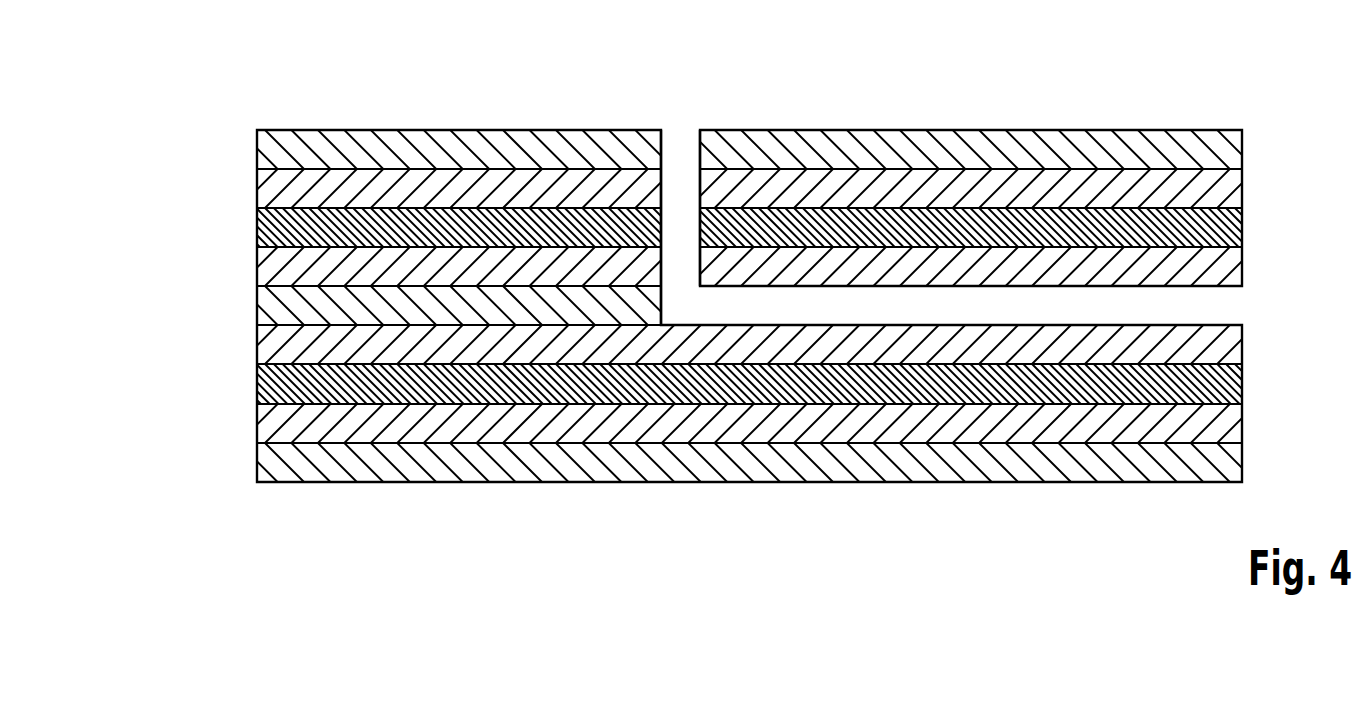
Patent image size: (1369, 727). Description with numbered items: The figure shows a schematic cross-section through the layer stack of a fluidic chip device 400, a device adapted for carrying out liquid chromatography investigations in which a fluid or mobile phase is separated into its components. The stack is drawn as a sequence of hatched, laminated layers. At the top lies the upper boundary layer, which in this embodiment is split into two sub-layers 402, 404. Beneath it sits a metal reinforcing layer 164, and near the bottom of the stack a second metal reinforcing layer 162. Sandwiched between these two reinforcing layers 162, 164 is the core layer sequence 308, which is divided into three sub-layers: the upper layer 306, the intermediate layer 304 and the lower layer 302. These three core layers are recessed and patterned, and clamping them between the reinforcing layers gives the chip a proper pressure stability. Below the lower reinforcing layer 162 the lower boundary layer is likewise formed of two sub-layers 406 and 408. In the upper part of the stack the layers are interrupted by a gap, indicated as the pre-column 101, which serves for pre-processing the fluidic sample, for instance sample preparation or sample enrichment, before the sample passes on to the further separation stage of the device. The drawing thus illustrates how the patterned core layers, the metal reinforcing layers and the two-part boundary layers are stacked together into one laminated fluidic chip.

The fluidic chip device 400 is at (684, 284).
The pre-column 101 is at (682, 170).
The upper boundary sub-layer 402 is at (1223, 150).
The upper boundary sub-layer 404 is at (1223, 190).
The metal reinforcing layer 164 is at (1223, 228).
The upper layer 306 is at (325, 265).
The intermediate layer 304 is at (318, 304).
The lower layer 302 is at (326, 343).
The core layer sequence 308 is at (684, 308).
The metal reinforcing layer 162 is at (1223, 383).
The lower boundary sub-layer 406 is at (1223, 421).
The lower boundary sub-layer 408 is at (1223, 462).